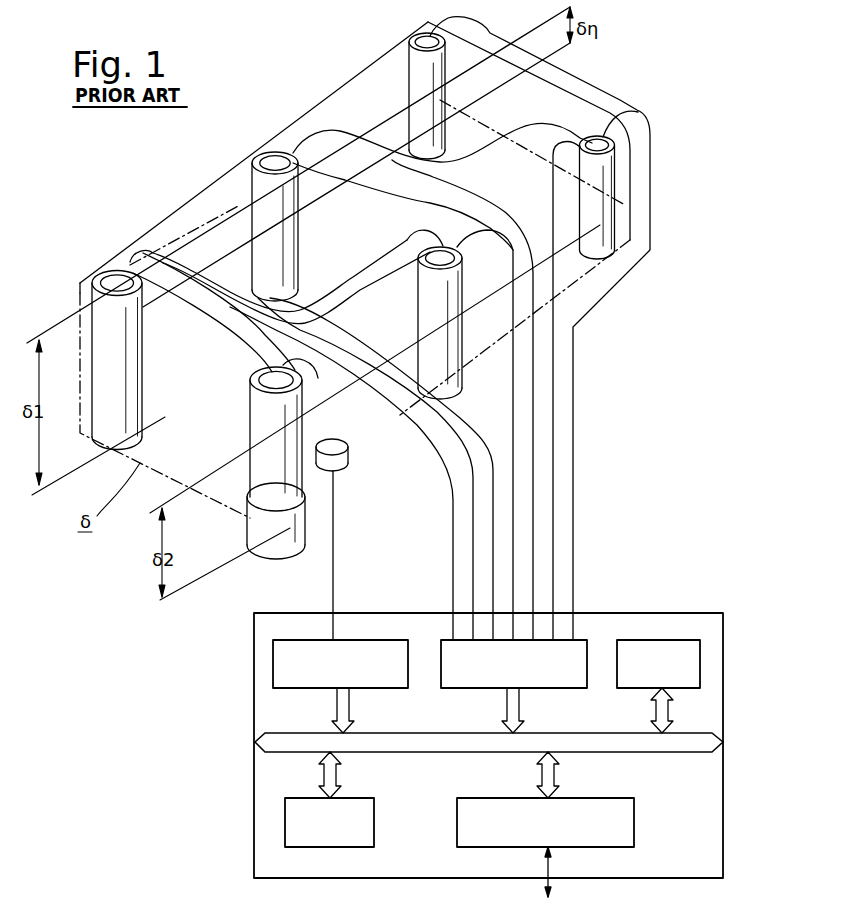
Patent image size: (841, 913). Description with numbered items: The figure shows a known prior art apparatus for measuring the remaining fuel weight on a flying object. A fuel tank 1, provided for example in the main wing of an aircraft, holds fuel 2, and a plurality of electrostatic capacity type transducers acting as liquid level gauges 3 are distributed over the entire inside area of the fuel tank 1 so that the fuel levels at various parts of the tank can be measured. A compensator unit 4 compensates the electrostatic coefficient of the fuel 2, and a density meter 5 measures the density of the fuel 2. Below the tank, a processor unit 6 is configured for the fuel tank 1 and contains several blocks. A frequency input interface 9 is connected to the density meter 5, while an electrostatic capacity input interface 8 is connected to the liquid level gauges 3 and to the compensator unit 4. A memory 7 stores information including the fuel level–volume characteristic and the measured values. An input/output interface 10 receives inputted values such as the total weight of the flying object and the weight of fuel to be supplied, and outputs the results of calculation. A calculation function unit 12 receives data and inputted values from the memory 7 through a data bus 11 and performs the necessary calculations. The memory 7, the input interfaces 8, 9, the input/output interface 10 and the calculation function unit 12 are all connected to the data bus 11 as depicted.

The fuel tank 1 is at (193, 200).
The fuel 2 is at (498, 360).
The liquid level gauges 3 is at (100, 272).
The compensator unit 4 is at (250, 506).
The density meter 5 is at (341, 455).
The processor unit 6 is at (254, 698).
The memory 7 is at (297, 798).
The electrostatic capacity input interface 8 is at (590, 640).
The frequency input interface 9 is at (312, 640).
The input/output interface 10 is at (634, 798).
The data bus 11 is at (432, 752).
The calculation function unit 12 is at (655, 640).